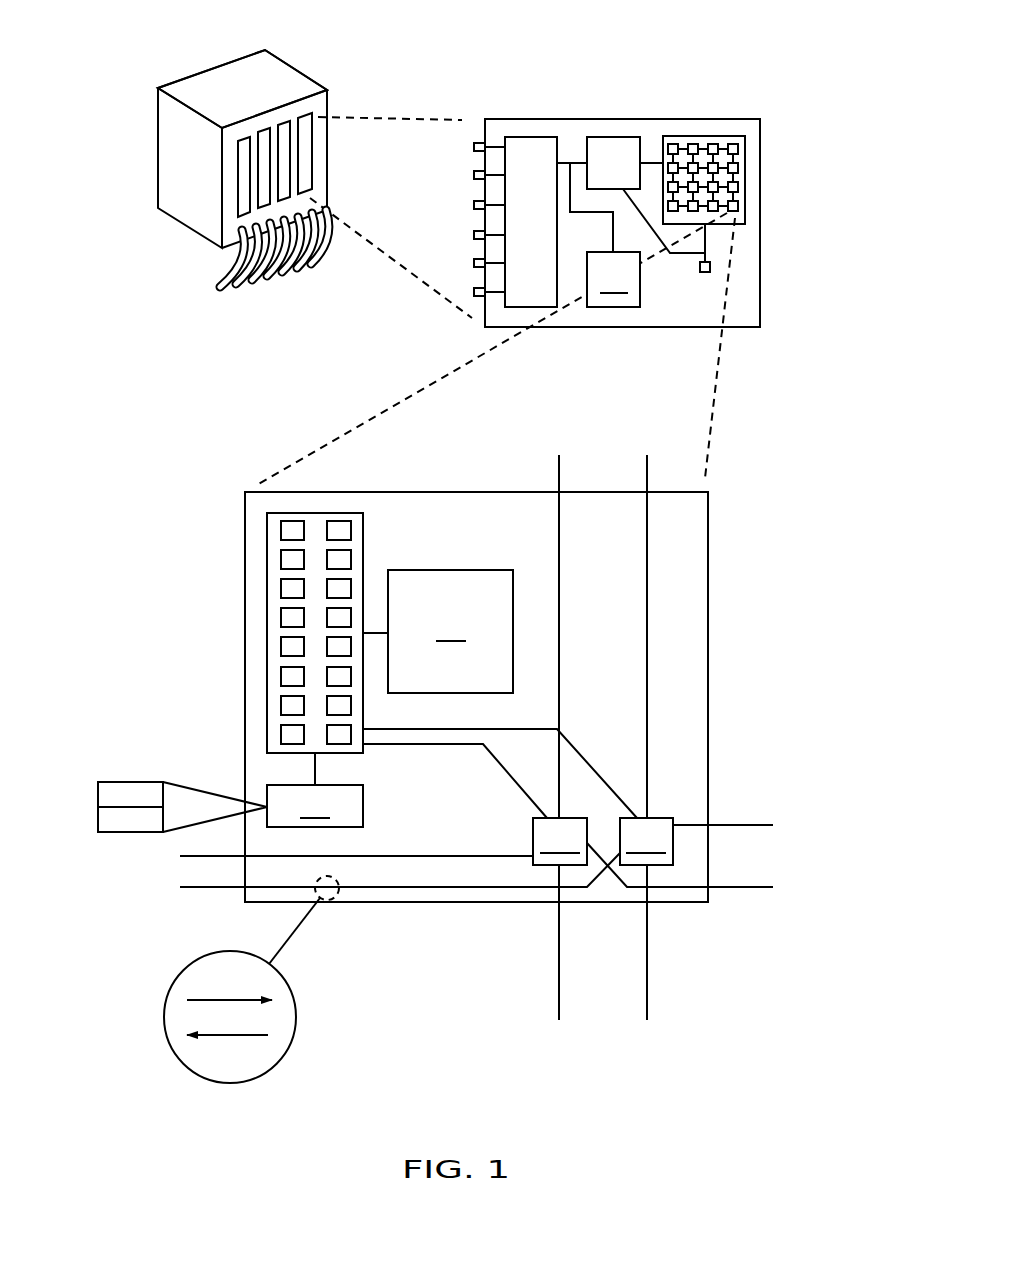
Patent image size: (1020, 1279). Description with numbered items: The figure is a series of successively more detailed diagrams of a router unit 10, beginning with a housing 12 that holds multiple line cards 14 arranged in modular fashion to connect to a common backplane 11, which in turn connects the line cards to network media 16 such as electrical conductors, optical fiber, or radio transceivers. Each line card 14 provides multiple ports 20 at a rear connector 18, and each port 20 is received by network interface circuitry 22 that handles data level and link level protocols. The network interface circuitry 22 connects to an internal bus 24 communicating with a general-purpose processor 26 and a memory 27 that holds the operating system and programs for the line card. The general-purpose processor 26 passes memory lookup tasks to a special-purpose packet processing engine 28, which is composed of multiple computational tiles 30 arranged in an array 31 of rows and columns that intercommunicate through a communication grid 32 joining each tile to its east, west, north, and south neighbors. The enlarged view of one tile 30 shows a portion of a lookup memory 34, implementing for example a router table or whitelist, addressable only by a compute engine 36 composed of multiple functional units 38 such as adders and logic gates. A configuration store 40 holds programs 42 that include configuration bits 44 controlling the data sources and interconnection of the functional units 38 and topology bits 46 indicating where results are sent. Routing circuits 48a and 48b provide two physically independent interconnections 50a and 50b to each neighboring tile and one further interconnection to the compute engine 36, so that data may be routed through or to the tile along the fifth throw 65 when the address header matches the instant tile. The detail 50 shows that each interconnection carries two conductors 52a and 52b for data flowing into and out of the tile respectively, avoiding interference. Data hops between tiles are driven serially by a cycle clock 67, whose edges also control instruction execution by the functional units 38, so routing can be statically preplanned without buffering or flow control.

The router unit 10 is at (335, 48).
The backplane 11 is at (142, 117).
The housing 12 is at (227, 78).
The line card 14 is at (288, 127).
The network media 16 is at (233, 277).
The rear connector 18 is at (460, 103).
The port 20 is at (474, 292).
The network interface circuitry 22 is at (530, 137).
The internal bus 24 is at (580, 162).
The general-purpose processor 26 is at (612, 137).
The memory 27 is at (613, 279).
The packet processing engine 28 is at (745, 140).
The computational tile 30 is at (738, 206).
The array 31 is at (738, 222).
The communication grid 32 is at (725, 145).
The lookup memory 34 is at (438, 631).
The compute engine 36 is at (263, 533).
The functional unit 38 is at (280, 648).
The configuration store 40 is at (315, 806).
The program 42 is at (127, 768).
The configuration bits 44 is at (102, 791).
The topology bits 46 is at (102, 818).
The routing circuit 48a is at (560, 841).
The routing circuit 48b is at (646, 841).
The interconnection 50 is at (212, 952).
The interconnection 50a is at (559, 470).
The interconnection 50b is at (646, 472).
The conductor 52a is at (225, 1000).
The conductor 52b is at (232, 1036).
The fifth throw 65 is at (512, 785).
The cycle clock 67 is at (705, 272).